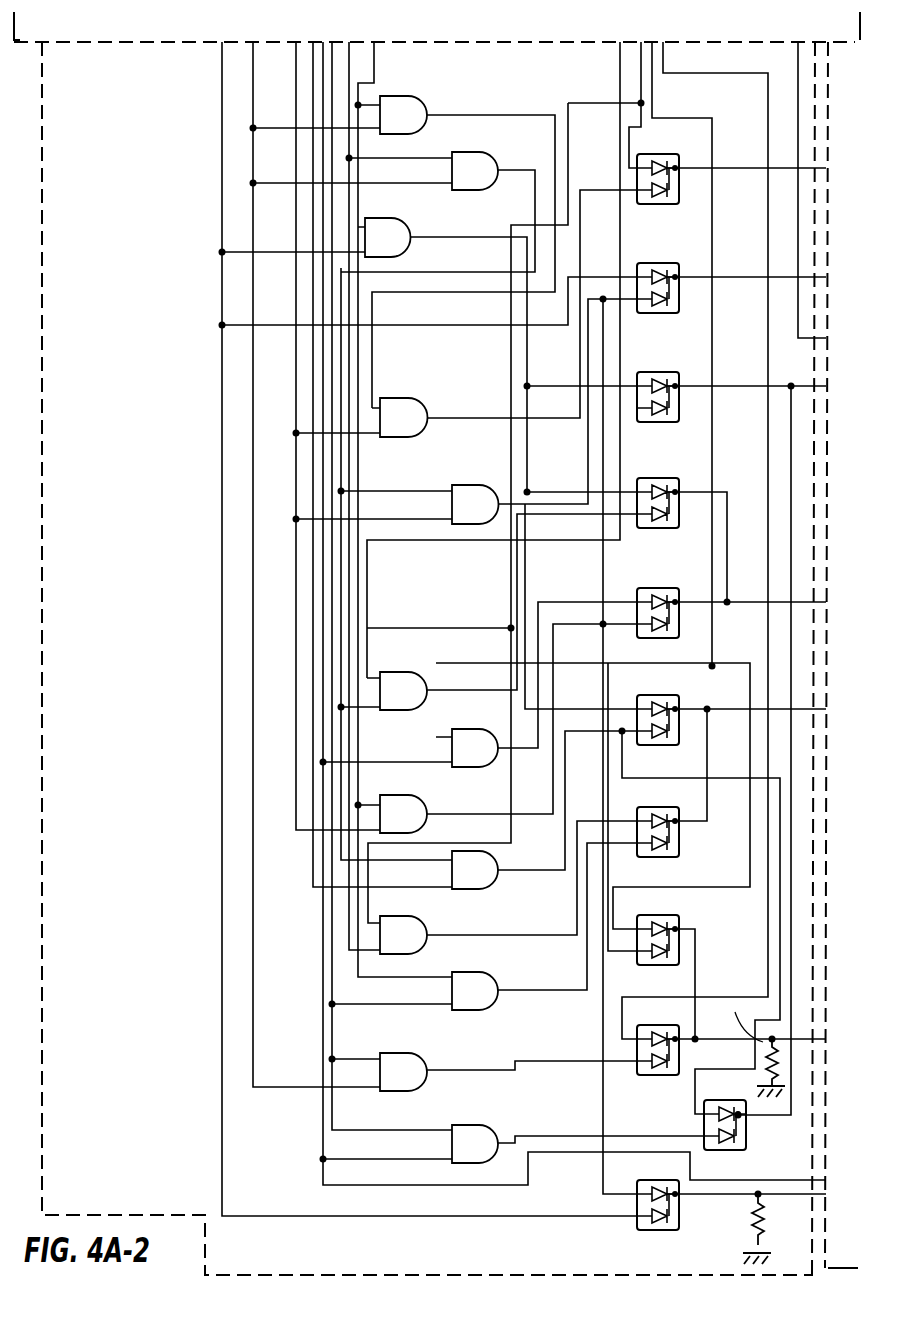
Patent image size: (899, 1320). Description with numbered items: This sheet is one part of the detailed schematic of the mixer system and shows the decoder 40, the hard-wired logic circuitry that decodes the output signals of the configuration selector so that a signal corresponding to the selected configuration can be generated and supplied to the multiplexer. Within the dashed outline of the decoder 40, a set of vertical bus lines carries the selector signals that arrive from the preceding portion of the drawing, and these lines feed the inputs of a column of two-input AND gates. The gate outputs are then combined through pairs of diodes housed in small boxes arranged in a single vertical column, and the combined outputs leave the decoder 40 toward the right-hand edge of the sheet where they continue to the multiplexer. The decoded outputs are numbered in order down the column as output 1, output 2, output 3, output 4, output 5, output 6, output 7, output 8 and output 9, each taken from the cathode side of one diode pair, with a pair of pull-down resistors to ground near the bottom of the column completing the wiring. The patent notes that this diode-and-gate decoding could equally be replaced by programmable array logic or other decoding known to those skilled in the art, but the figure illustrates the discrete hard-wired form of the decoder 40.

The decoder 40 is at (32, 706).
The diode pair output 1 is at (665, 180).
The diode pair output 2 is at (665, 289).
The diode pair output 3 is at (665, 398).
The diode pair output 4 is at (665, 504).
The diode pair output 5 is at (665, 614).
The diode pair output 6 is at (665, 721).
The diode pair output 7 is at (665, 833).
The diode pair output 8 is at (664, 941).
The diode pair output 9 is at (665, 1051).